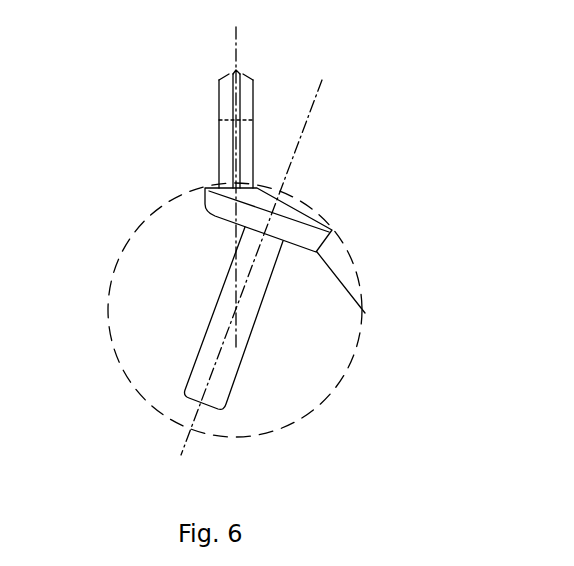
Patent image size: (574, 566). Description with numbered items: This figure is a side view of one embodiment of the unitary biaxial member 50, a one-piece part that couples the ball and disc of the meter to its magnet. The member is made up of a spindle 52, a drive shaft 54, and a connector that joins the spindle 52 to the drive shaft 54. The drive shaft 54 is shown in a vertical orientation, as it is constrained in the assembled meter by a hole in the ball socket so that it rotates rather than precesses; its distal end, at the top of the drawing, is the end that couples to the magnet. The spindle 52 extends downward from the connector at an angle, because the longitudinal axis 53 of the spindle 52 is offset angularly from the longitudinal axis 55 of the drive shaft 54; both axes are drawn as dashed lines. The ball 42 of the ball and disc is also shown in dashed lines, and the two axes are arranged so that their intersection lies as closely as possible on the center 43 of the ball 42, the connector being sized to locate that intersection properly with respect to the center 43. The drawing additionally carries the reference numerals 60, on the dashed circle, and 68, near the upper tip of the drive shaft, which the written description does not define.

The ball 42 is at (430, 414).
The center of the ball 43 is at (212, 250).
The unitary biaxial member 50 is at (313, 167).
The spindle 52 is at (166, 318).
The longitudinal axis of the spindle 53 is at (188, 267).
The drive shaft 54 is at (176, 131).
The longitudinal axis of the drive shaft 55 is at (190, 178).
The rotation circle 60 is at (257, 310).
The shaft tip 68 is at (264, 122).